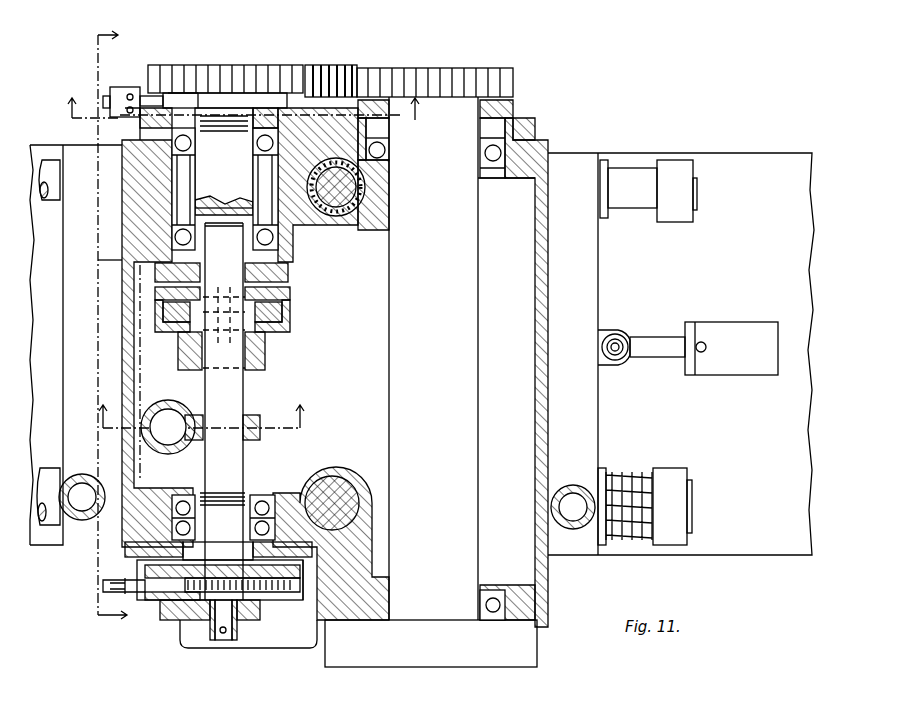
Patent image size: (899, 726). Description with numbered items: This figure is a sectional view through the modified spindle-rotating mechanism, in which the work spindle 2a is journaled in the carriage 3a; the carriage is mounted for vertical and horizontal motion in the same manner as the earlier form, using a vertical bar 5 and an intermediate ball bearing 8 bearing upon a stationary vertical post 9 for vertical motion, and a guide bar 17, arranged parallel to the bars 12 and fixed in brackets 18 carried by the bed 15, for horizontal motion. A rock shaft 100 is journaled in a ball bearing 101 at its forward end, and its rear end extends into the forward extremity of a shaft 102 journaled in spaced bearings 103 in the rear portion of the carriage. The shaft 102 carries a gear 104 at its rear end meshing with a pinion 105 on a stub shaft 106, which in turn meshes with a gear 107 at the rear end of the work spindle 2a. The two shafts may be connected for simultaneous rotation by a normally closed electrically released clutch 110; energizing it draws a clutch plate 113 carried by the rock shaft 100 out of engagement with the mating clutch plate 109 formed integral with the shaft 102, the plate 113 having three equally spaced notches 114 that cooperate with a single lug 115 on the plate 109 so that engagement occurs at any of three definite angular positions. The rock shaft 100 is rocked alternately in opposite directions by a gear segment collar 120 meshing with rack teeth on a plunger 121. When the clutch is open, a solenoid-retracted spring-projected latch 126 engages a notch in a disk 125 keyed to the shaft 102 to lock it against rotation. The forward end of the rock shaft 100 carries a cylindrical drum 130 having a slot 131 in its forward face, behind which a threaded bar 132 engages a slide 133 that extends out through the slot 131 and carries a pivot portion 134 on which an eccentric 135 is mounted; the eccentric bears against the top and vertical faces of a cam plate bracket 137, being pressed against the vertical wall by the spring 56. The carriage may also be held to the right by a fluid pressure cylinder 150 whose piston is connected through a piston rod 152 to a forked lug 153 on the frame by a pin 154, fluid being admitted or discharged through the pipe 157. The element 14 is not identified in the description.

The work spindle 2a is at (468, 378).
The carriage 3a is at (546, 192).
The vertical bar 5 is at (345, 485).
The intermediate ball bearing 8 is at (201, 424).
The stationary vertical post 9 is at (356, 230).
The bars 12 is at (648, 484).
The block 14 is at (688, 478).
The bed 15 is at (760, 543).
The guide bar 17 is at (636, 206).
The brackets 18 is at (682, 214).
The spring 56 is at (626, 475).
The rock shaft 100 is at (228, 405).
The ball bearing 101 is at (262, 495).
The shaft 102 is at (212, 186).
The spaced bearings 103 is at (176, 150).
The gear 104 is at (278, 78).
The pinion 105 is at (340, 76).
The stub shaft 106 is at (386, 152).
The gear 107 is at (414, 76).
The clutch plate 109 is at (290, 275).
The electrically released clutch 110 is at (282, 343).
The clutch plate 113 is at (293, 303).
The notches 114 is at (290, 320).
The lug 115 is at (290, 292).
The gear segment collar 120 is at (258, 432).
The plunger 121 is at (170, 440).
The disk 125 is at (232, 100).
The latch 126 is at (125, 92).
The cylindrical drum 130 is at (150, 603).
The slot 131 is at (285, 603).
The threaded bar 132 is at (118, 585).
The slide 133 is at (222, 578).
The pivot portion 134 is at (216, 640).
The eccentric 135 is at (250, 625).
The cam plate bracket 137 is at (178, 622).
The fluid pressure cylinder 150 is at (750, 360).
The piston rod 152 is at (663, 340).
The forked lug 153 is at (618, 332).
The pin 154 is at (616, 352).
The pipe 157 is at (704, 343).